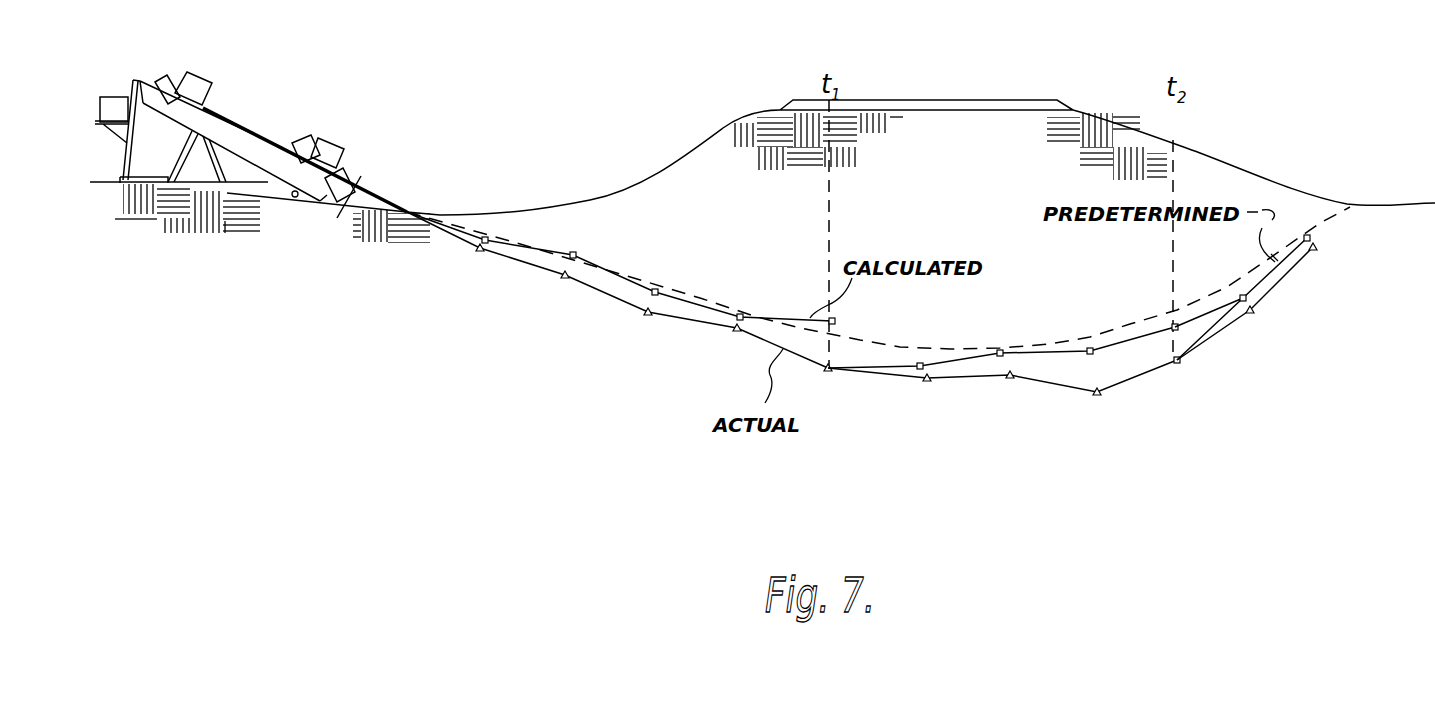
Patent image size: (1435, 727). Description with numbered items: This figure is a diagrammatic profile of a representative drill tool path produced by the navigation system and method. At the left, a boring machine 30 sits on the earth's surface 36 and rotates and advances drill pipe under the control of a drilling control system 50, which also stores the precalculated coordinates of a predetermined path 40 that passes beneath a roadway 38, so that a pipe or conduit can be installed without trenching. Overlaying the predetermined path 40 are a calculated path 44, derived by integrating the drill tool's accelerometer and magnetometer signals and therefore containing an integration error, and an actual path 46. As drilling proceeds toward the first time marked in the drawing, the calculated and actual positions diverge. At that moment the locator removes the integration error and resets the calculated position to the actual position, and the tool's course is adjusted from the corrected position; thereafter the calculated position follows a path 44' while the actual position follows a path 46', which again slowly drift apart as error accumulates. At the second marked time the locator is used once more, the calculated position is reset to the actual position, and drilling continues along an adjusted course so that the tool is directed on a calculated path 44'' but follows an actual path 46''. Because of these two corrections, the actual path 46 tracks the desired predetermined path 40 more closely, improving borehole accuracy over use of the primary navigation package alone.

The boring machine 30 is at (257, 111).
The earth's surface 36 is at (293, 197).
The roadway 38 is at (970, 100).
The predetermined path 40 is at (1135, 322).
The calculated path 44 is at (621, 240).
The actual path 46 is at (619, 291).
The calculated path after time t1 44' is at (1003, 326).
The actual path after time t1 46' is at (1004, 410).
The calculated path after time t2 44'' is at (1242, 319).
The actual path after time t2 46'' is at (1260, 304).
The drilling control system 50 is at (113, 97).